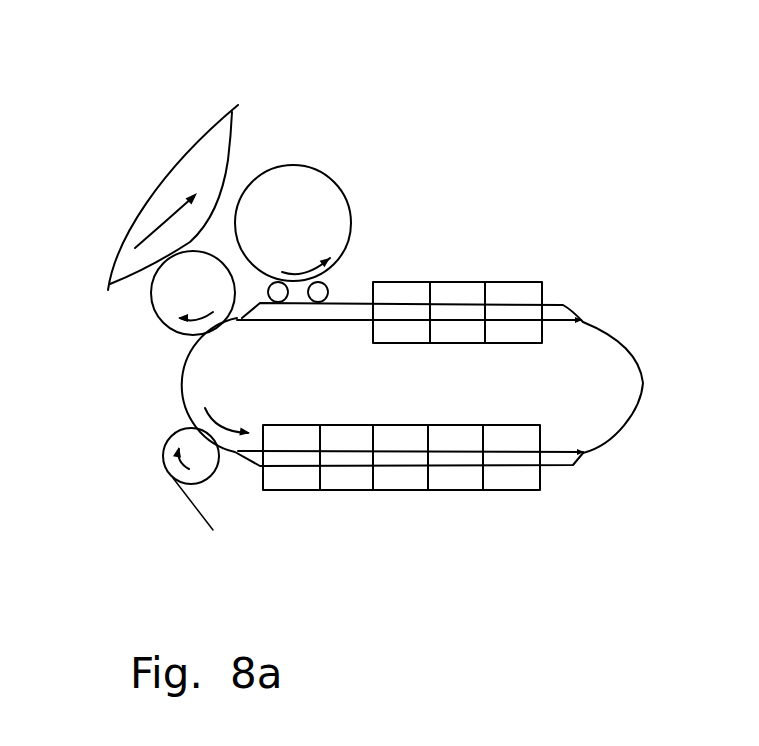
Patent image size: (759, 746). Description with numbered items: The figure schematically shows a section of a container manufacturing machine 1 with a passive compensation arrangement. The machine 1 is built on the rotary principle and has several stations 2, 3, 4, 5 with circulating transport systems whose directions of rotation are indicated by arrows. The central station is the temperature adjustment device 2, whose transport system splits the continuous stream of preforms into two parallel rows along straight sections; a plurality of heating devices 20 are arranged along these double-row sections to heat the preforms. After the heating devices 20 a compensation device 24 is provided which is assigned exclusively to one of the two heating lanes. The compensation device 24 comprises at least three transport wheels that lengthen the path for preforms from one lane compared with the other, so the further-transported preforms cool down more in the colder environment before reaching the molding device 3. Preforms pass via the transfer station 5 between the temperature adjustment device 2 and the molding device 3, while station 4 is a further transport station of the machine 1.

The container manufacturing machine 1 is at (681, 184).
The temperature adjustment device 2 is at (224, 380).
The molding device 3 is at (210, 167).
The station 4 is at (165, 461).
The transfer station 5 is at (178, 297).
The heating devices 20 is at (405, 292).
The compensation device 24 is at (307, 197).